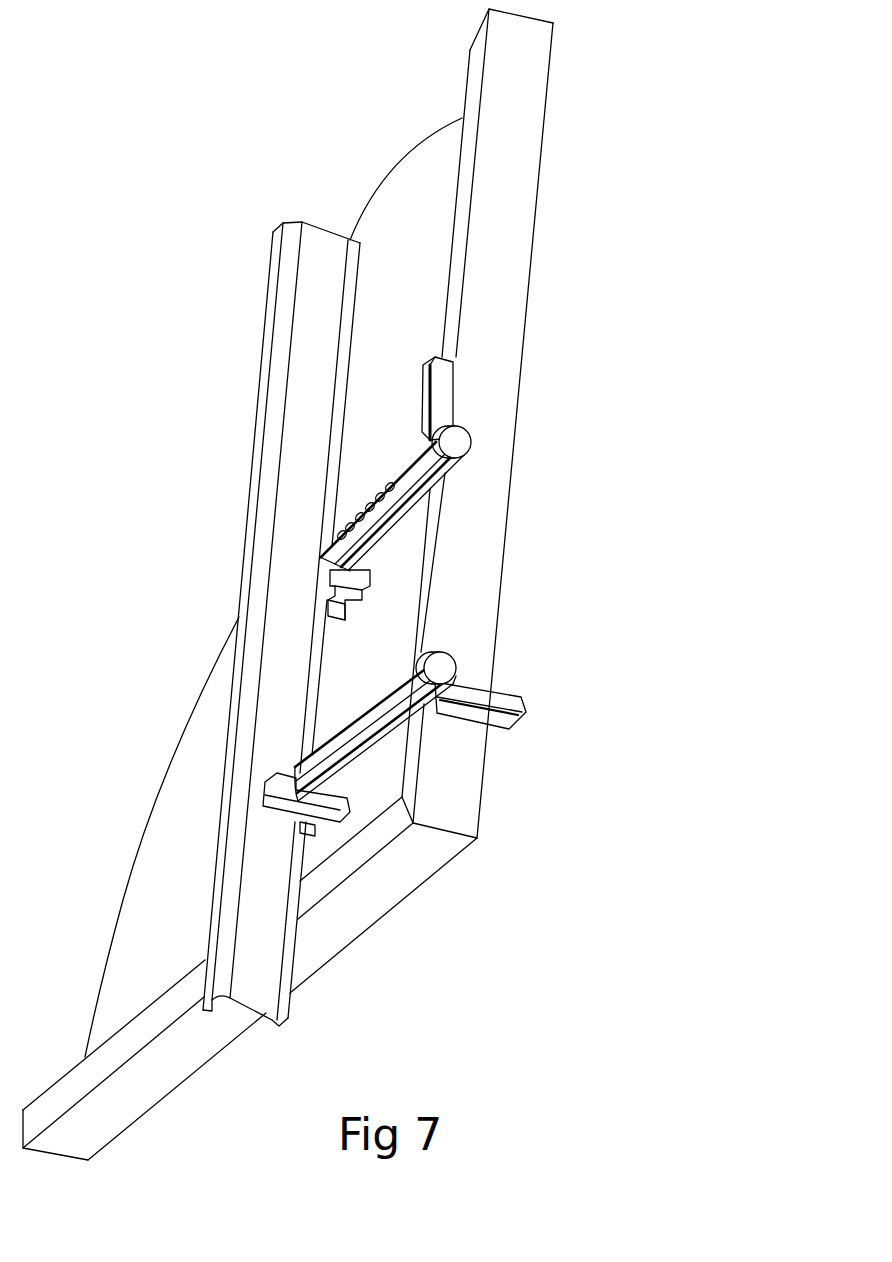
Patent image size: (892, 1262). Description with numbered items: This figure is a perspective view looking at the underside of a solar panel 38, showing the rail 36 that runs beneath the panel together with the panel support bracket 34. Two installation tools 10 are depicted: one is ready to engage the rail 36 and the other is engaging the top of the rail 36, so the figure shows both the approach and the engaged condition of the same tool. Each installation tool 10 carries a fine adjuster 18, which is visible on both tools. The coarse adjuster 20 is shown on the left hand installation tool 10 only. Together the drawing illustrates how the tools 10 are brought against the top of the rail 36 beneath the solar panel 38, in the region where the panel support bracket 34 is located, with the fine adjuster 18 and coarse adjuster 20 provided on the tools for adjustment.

The installation tool 10 is at (378, 482).
The fine adjuster 18 is at (456, 442).
The coarse adjuster 20 is at (373, 496).
The panel support bracket 34 is at (447, 387).
The rail 36 is at (303, 340).
The solar panel 38 is at (487, 292).